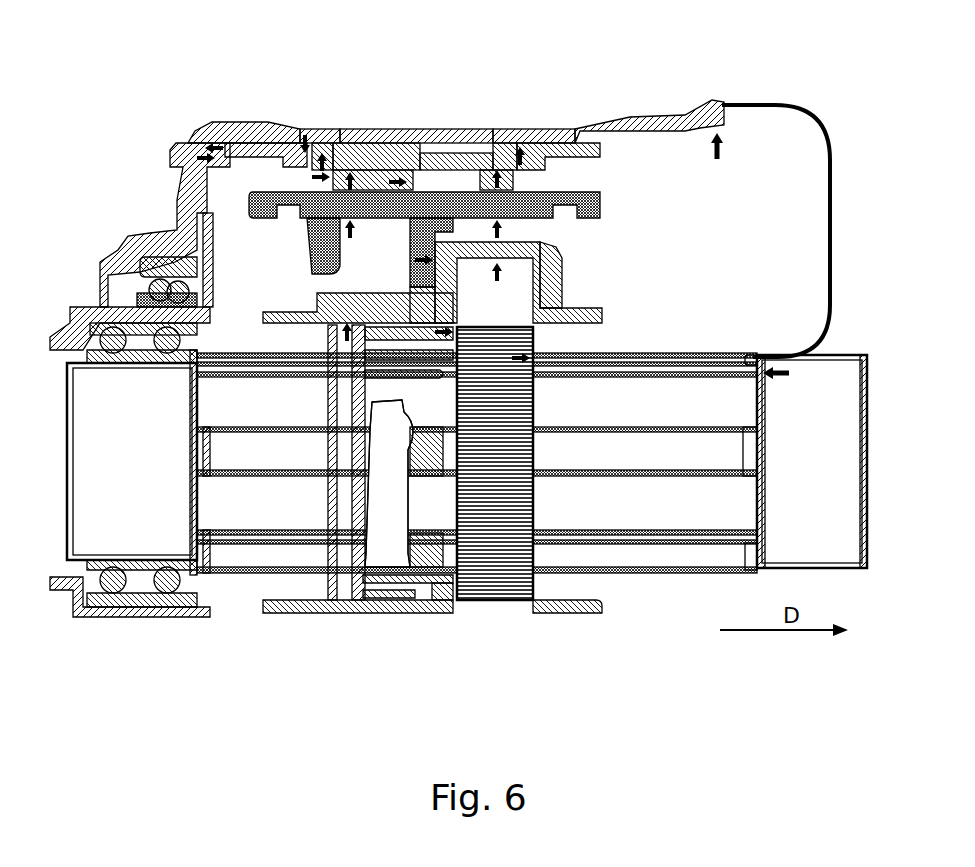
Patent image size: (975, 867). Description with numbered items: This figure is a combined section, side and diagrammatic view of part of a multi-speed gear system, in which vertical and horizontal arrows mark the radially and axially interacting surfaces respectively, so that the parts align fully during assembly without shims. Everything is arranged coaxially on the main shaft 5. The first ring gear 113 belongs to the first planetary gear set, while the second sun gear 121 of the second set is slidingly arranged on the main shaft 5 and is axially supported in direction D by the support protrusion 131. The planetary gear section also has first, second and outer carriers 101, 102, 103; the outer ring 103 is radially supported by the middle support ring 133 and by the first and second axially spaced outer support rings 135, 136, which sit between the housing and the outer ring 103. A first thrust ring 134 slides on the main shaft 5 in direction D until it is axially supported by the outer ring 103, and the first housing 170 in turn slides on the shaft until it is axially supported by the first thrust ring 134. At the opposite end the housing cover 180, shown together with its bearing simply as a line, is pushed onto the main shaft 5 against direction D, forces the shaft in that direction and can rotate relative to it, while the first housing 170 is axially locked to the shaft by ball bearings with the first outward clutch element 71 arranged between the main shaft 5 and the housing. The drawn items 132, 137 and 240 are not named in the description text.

The main shaft 5 is at (713, 357).
The first outward clutch element 71 is at (130, 300).
The first carrier 101 is at (560, 257).
The second carrier 102 is at (567, 190).
The outer carrier (outer ring) 103 is at (577, 140).
The first ring gear 113 is at (350, 133).
The second sun gear 121 is at (533, 337).
The support protrusion 131 is at (545, 600).
The plate 132 is at (347, 600).
The middle support ring 133 is at (473, 163).
The first thrust ring 134 is at (217, 127).
The first outer support ring 135 is at (300, 128).
The second outer support ring 136 is at (517, 137).
The shaft end portion 137 is at (710, 567).
The first housing 170 is at (170, 233).
The housing cover 180 is at (793, 105).
The wedge element 240 is at (432, 583).